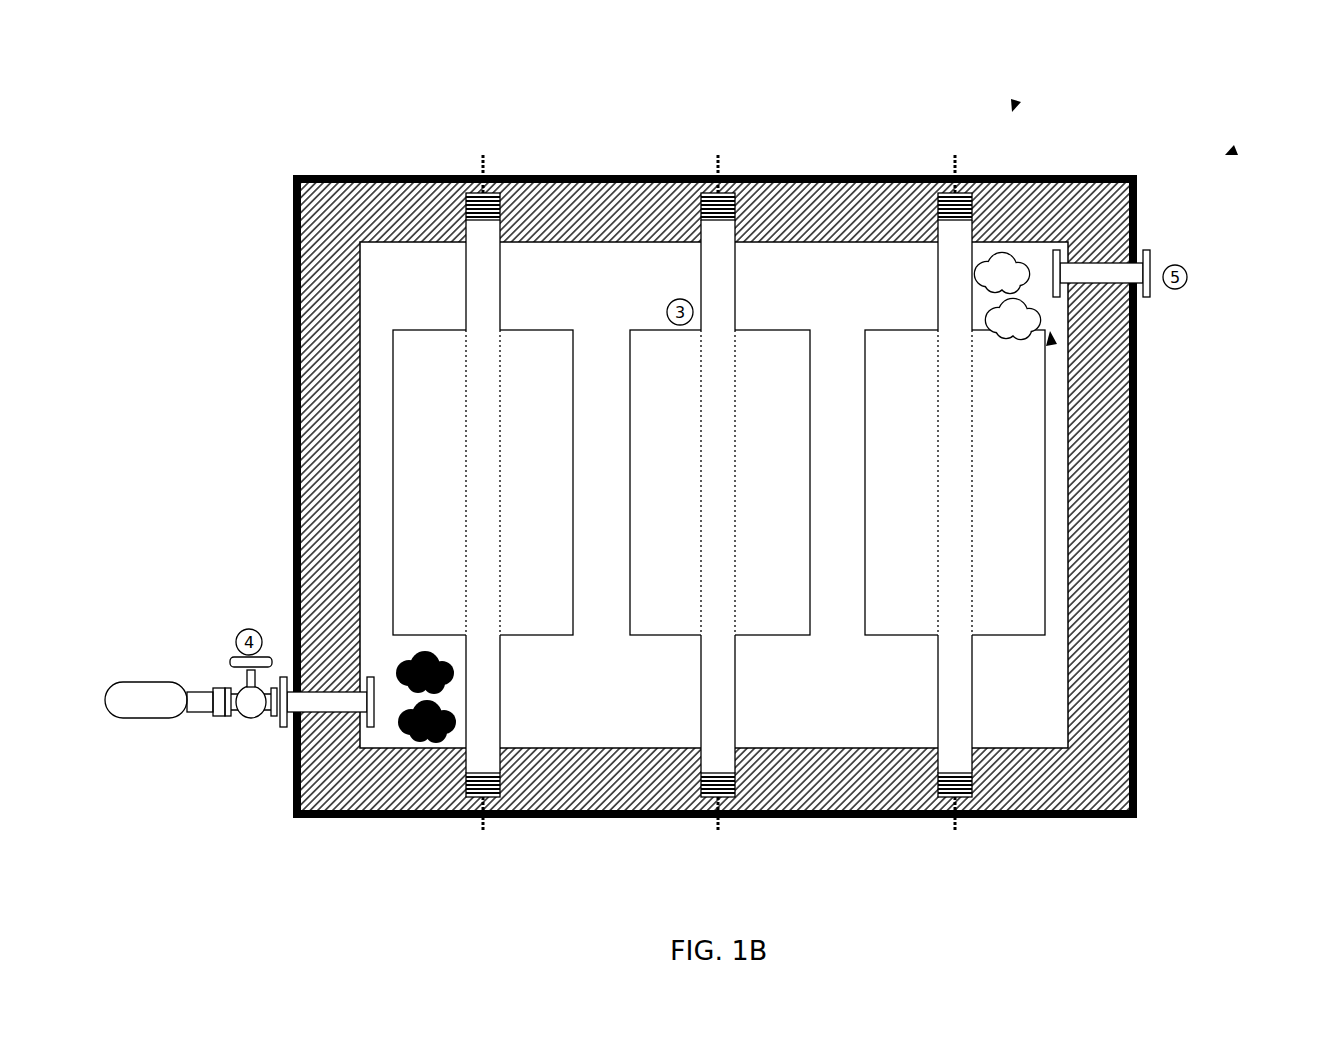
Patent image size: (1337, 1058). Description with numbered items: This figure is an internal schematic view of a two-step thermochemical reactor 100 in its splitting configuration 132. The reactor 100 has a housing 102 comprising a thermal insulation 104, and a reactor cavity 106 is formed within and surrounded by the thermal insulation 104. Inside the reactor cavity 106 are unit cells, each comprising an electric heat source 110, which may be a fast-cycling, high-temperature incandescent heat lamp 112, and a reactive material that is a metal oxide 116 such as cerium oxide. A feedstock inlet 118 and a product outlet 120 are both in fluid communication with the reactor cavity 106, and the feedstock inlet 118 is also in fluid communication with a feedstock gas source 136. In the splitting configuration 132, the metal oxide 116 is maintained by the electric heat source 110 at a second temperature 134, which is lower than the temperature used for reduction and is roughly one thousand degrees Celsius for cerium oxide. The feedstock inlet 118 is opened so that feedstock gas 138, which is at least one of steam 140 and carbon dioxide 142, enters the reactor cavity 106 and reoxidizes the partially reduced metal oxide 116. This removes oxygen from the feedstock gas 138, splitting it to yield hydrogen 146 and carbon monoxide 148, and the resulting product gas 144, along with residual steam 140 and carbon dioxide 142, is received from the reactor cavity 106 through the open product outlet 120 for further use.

The thermochemical reactor 100 is at (1236, 150).
The housing 102 is at (327, 176).
The thermal insulation 104 is at (330, 273).
The reactor cavity 106 is at (615, 267).
The electric heat source 110 is at (722, 753).
The incandescent heat lamp 112 is at (728, 722).
The metal oxide 116 is at (1020, 627).
The feedstock inlet 118 is at (305, 742).
The product outlet 120 is at (1187, 284).
The splitting configuration 132 is at (1014, 106).
The second temperature 134 is at (783, 302).
The feedstock gas source 136 is at (154, 686).
The feedstock gas 138 is at (380, 657).
The steam 140 is at (405, 688).
The carbon dioxide 142 is at (457, 723).
The product gas 144 is at (1052, 340).
The hydrogen 146 is at (1024, 339).
The carbon monoxide 148 is at (1018, 257).